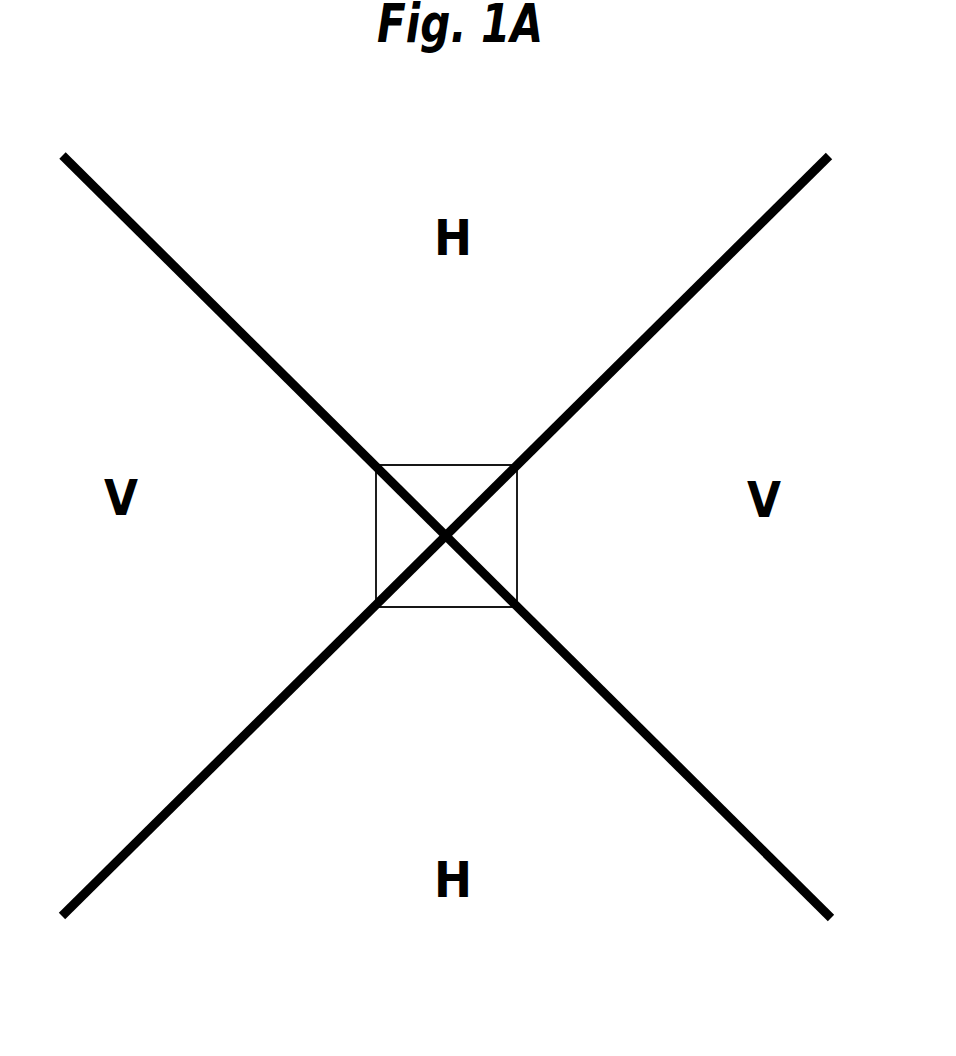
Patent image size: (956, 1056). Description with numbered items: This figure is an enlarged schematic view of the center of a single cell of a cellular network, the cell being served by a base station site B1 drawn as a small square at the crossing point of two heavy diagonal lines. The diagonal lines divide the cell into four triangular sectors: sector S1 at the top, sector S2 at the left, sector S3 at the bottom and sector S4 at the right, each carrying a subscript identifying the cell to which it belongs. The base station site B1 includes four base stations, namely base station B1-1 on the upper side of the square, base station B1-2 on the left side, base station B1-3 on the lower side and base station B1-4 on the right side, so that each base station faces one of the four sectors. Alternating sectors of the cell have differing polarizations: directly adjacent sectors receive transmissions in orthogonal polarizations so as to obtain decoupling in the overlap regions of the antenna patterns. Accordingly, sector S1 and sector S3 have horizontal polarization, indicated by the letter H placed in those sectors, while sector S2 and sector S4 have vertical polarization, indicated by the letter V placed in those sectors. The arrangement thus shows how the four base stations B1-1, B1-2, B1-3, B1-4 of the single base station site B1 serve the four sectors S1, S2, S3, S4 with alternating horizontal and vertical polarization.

The base station site B1 is at (548, 506).
The base station B1-1 is at (447, 475).
The base station B1-2 is at (390, 535).
The base station B1-3 is at (440, 587).
The base station B1-4 is at (507, 542).
The sector S1 is at (594, 203).
The sector S2 is at (130, 348).
The sector S3 is at (303, 875).
The sector S4 is at (814, 649).